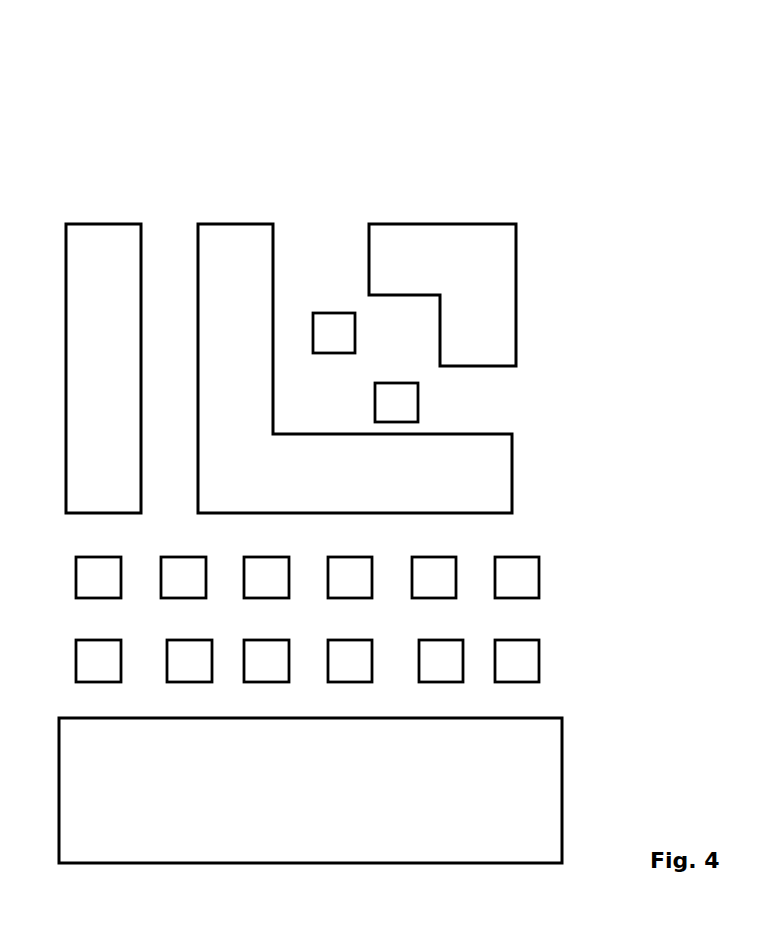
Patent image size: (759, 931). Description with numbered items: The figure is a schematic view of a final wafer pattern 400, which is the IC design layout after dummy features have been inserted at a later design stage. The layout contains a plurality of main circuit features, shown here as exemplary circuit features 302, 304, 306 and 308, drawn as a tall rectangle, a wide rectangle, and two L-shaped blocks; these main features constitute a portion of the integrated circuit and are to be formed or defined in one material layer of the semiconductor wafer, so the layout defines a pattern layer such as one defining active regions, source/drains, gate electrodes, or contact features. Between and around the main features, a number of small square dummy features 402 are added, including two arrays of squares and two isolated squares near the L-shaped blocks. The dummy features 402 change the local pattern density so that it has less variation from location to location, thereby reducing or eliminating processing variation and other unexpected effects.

The final wafer pattern 400 is at (560, 134).
The circuit feature 302 is at (122, 457).
The circuit feature 304 is at (269, 821).
The circuit feature 306 is at (295, 484).
The circuit feature 308 is at (444, 266).
The dummy features 402 is at (332, 327).